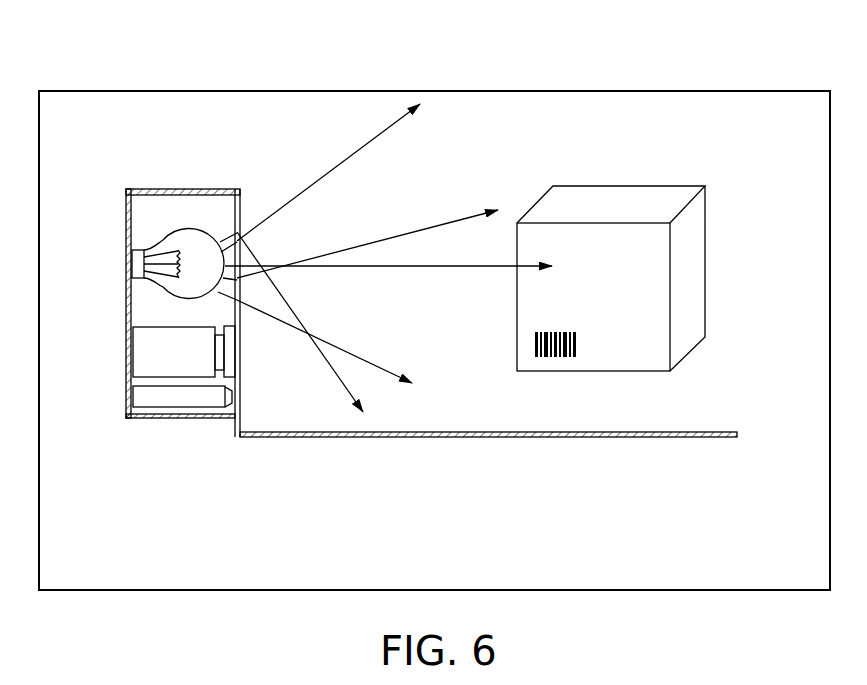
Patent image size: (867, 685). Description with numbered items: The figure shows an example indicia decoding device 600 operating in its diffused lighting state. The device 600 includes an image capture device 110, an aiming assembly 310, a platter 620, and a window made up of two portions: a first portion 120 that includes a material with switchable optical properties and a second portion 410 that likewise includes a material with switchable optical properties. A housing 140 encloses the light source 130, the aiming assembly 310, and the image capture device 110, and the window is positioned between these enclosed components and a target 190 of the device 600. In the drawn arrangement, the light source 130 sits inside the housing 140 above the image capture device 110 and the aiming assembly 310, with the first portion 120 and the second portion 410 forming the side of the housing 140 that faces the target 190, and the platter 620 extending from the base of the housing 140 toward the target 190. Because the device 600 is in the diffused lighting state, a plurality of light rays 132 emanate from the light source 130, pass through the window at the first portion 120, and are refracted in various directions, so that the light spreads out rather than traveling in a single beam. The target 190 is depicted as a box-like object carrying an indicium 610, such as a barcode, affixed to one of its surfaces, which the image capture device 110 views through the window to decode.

The indicia decoding device 600 is at (435, 90).
The housing 140 is at (182, 188).
The first portion of the window 120 is at (240, 200).
The light source 130 is at (150, 264).
The light rays 132 is at (418, 264).
The image capture device 110 is at (150, 356).
The aiming assembly 310 is at (150, 401).
The second portion of the window 410 is at (240, 378).
The target 190 is at (633, 202).
The indicium 610 is at (552, 357).
The platter 620 is at (485, 438).